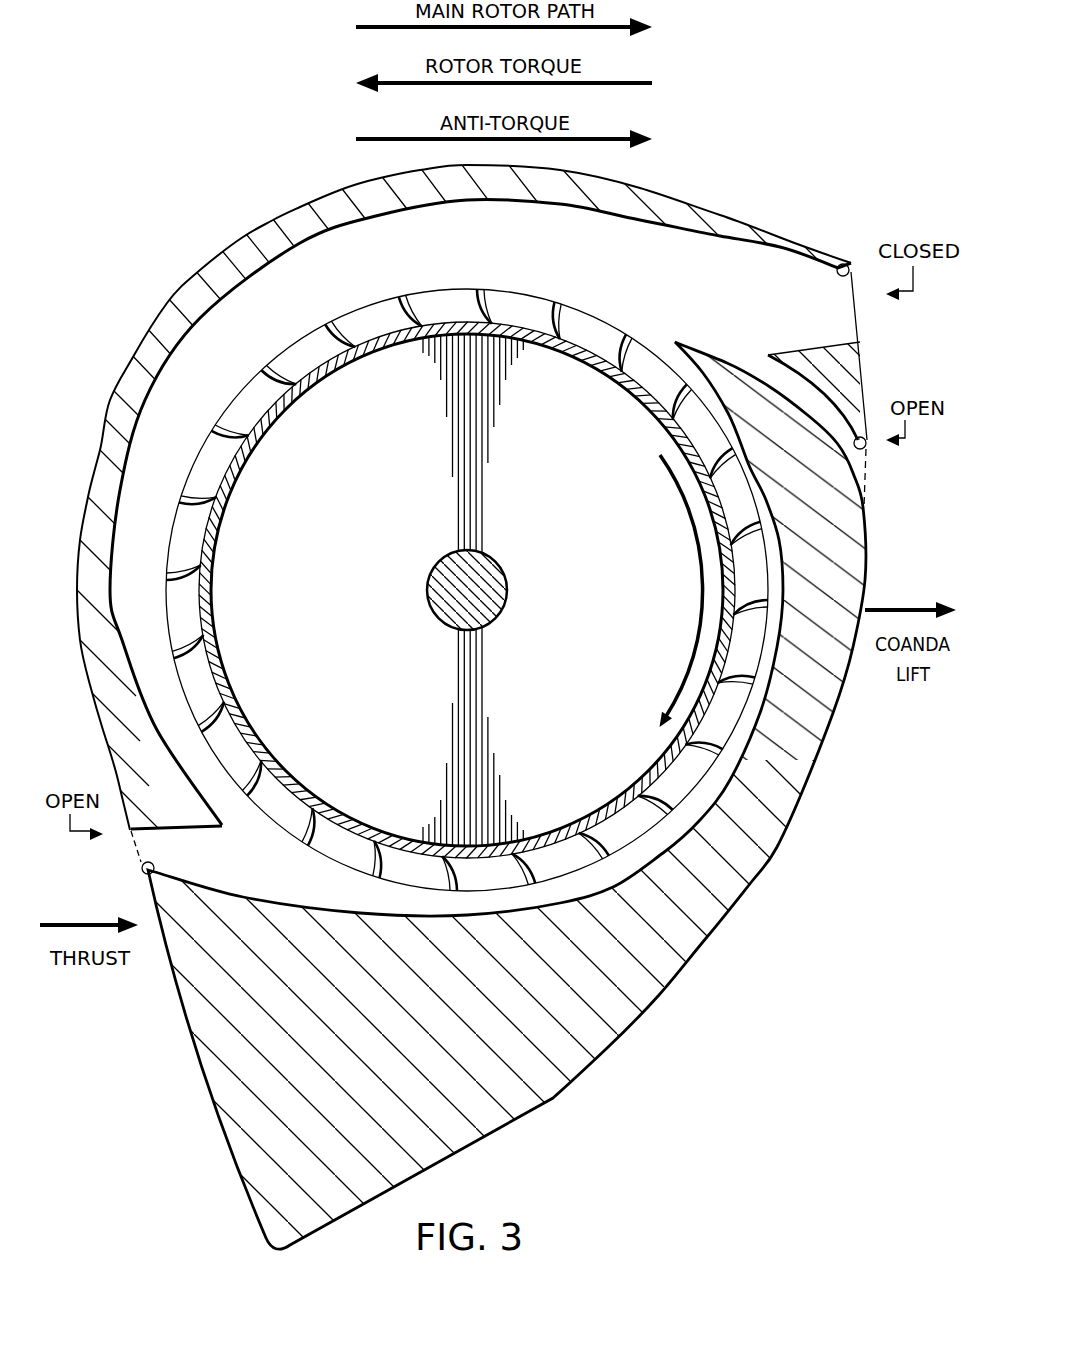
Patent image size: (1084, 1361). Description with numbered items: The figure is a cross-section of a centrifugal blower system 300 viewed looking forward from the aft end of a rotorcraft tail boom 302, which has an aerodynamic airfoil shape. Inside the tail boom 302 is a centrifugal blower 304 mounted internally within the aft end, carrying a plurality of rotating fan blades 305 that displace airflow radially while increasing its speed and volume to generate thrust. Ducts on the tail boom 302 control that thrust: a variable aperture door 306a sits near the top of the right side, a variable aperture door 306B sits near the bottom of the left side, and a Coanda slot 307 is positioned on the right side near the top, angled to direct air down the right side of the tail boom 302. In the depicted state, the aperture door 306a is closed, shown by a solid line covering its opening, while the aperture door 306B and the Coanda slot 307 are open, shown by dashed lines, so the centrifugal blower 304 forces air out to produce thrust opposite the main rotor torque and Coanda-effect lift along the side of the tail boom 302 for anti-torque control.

The centrifugal blower system 300 is at (221, 123).
The tail boom 302 is at (655, 988).
The centrifugal blower 304 is at (339, 301).
The fan blades 305 is at (500, 298).
The variable aperture door 306a is at (848, 264).
The variable aperture door 306B is at (142, 870).
The Coanda slot 307 is at (866, 450).